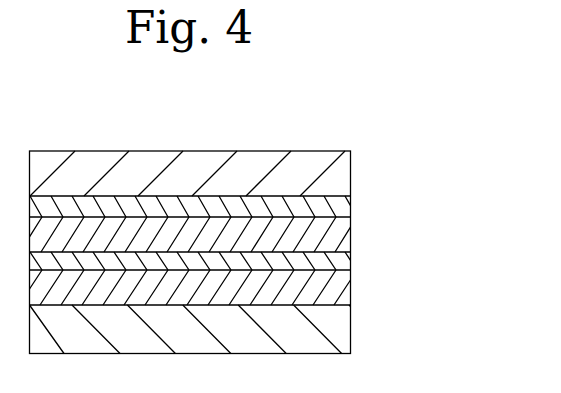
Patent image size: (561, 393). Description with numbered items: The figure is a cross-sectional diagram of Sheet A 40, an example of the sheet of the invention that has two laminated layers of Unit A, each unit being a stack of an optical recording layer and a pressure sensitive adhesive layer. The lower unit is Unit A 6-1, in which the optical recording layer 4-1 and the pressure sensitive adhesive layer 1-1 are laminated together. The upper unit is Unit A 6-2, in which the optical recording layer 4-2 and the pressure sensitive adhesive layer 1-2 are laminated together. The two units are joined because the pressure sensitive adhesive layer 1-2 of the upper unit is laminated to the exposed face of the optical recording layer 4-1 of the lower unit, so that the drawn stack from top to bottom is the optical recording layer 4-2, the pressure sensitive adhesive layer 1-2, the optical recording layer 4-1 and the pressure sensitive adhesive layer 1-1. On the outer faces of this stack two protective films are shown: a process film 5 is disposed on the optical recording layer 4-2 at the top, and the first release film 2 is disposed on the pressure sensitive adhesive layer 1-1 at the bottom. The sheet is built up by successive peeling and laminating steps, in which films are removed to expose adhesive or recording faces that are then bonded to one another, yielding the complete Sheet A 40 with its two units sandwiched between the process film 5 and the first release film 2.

The Sheet A 40 is at (279, 118).
The process film 5 is at (352, 168).
The optical recording layer 4-2 is at (352, 207).
The pressure sensitive adhesive layer 1-2 is at (352, 237).
The Unit A 6-2 is at (266, 222).
The optical recording layer 4-1 is at (352, 262).
The pressure sensitive adhesive layer 1-1 is at (352, 288).
The Unit A 6-1 is at (266, 280).
The first release film 2 is at (352, 328).